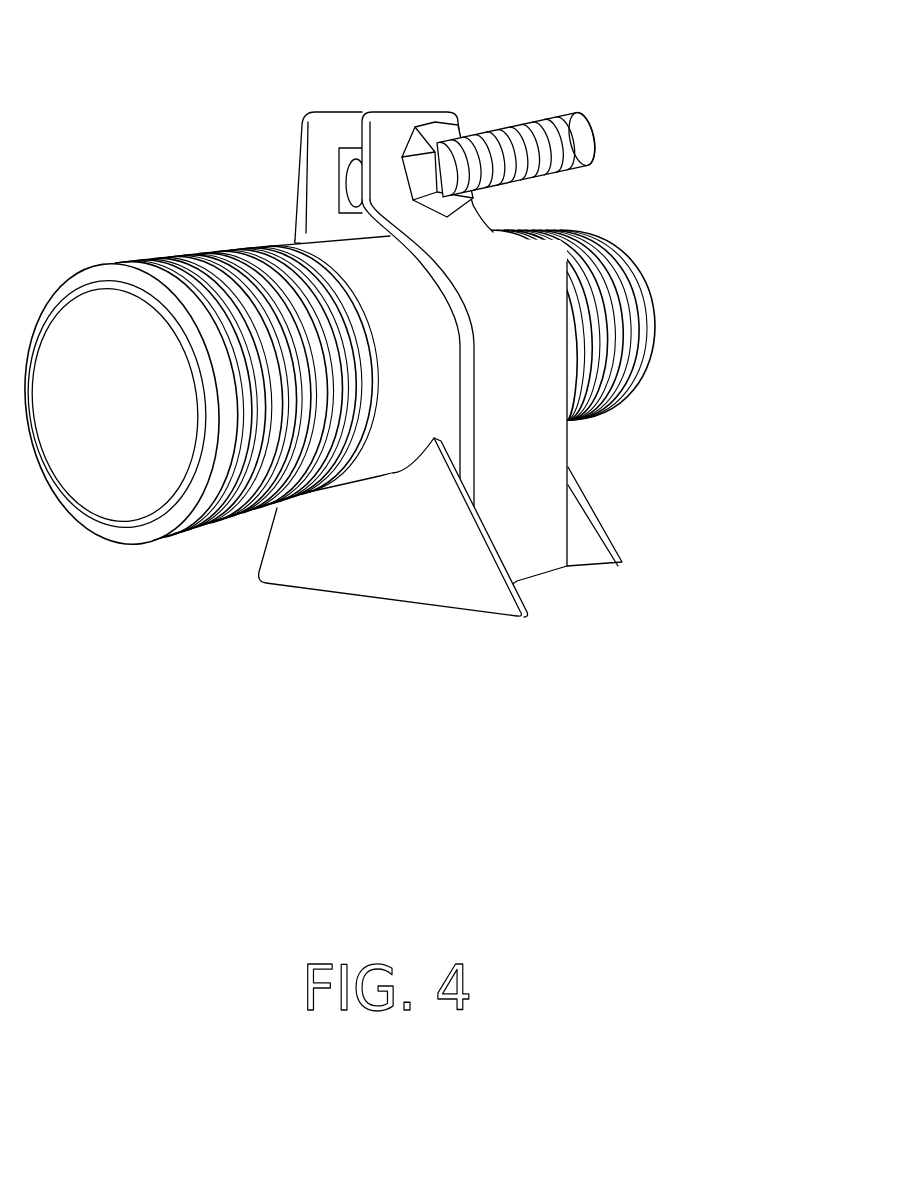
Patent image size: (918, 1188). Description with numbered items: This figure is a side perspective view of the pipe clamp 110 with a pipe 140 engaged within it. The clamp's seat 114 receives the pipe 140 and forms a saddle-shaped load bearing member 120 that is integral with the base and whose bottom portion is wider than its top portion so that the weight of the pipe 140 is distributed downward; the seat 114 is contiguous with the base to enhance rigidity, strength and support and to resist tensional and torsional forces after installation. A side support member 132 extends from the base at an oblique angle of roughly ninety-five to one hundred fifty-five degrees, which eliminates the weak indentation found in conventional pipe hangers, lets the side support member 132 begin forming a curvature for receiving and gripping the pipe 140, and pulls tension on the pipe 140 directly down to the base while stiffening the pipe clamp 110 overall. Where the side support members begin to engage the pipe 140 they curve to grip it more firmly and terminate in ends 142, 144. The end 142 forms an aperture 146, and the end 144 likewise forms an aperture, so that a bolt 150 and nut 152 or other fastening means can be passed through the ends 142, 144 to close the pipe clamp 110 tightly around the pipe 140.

The pipe clamp 110 is at (366, 357).
The seat 114 is at (515, 590).
The load bearing member 120 is at (393, 473).
The side support member 132 is at (566, 422).
The pipe 140 is at (295, 241).
The end 142 is at (303, 132).
The end 144 is at (479, 211).
The aperture 146 is at (362, 182).
The bolt 150 is at (494, 131).
The nut 152 is at (422, 126).